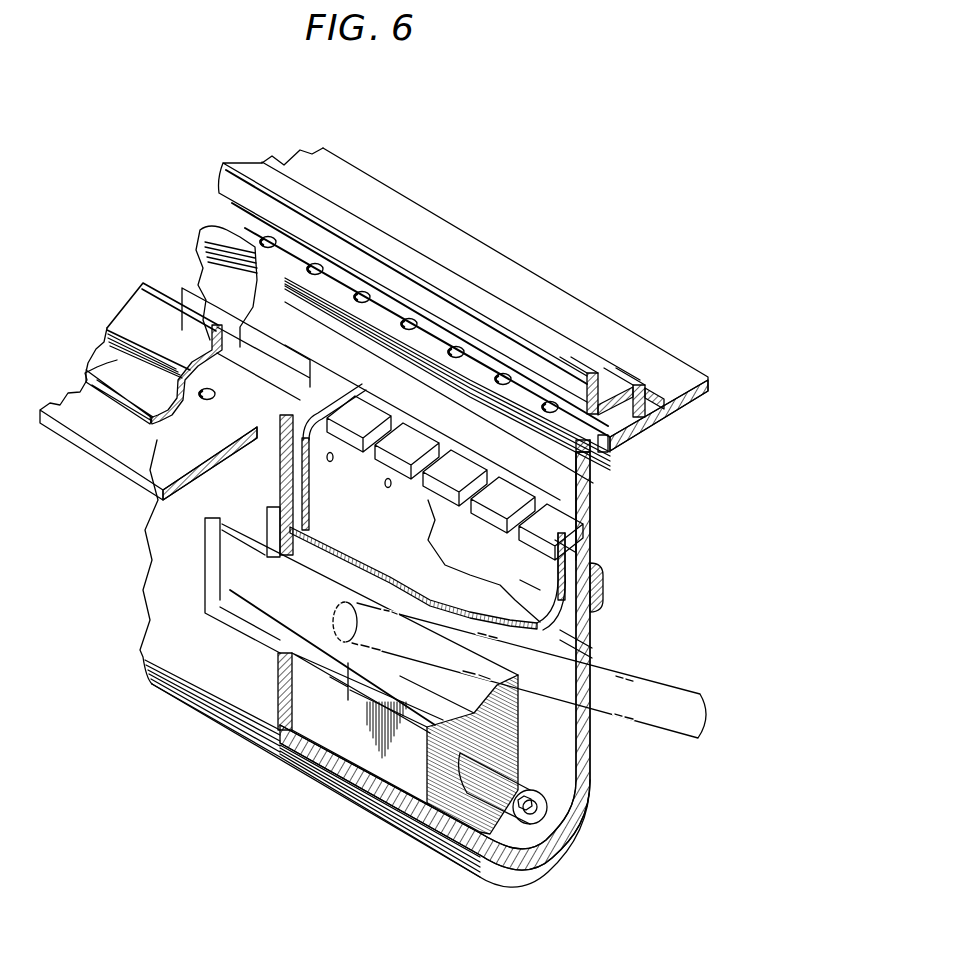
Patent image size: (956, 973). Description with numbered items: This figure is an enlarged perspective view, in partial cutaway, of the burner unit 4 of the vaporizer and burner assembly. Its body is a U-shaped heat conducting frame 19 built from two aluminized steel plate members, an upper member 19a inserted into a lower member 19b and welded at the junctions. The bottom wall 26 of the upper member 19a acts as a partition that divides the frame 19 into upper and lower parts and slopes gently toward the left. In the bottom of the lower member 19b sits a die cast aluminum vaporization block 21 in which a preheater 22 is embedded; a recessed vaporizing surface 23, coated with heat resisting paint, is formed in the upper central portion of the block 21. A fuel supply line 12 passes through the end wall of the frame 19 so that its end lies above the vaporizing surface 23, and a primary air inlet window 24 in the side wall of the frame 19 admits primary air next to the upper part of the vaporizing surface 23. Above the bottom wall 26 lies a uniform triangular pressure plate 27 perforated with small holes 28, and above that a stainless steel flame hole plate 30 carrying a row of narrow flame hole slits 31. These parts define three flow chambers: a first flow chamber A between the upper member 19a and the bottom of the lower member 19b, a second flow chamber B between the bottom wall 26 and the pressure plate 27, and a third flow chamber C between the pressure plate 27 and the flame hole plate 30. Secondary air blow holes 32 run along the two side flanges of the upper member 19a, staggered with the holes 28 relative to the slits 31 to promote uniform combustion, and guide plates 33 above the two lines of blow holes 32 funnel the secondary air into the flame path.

The drive assembly 4 is at (597, 655).
The fuel supply line 12 is at (673, 740).
The heat conducting frame 19 is at (591, 792).
The upper member 19a is at (522, 550).
The lower member 19b is at (607, 697).
The vaporization block 21 is at (520, 750).
The preheater 22 is at (508, 815).
The vaporizing surface 23 is at (300, 610).
The primary air inlet window 24 is at (209, 580).
The bottom wall 26 is at (593, 650).
The pressure plate 27 is at (560, 550).
The small holes 28 is at (510, 482).
The flame hole plate 30 is at (243, 257).
The flame hole slits 31 is at (208, 283).
The secondary air blow holes 32 is at (553, 404).
The guide plates 33 is at (133, 322).
The first flow chamber A is at (233, 553).
The second flow chamber B is at (530, 584).
The third flow chamber C is at (578, 527).